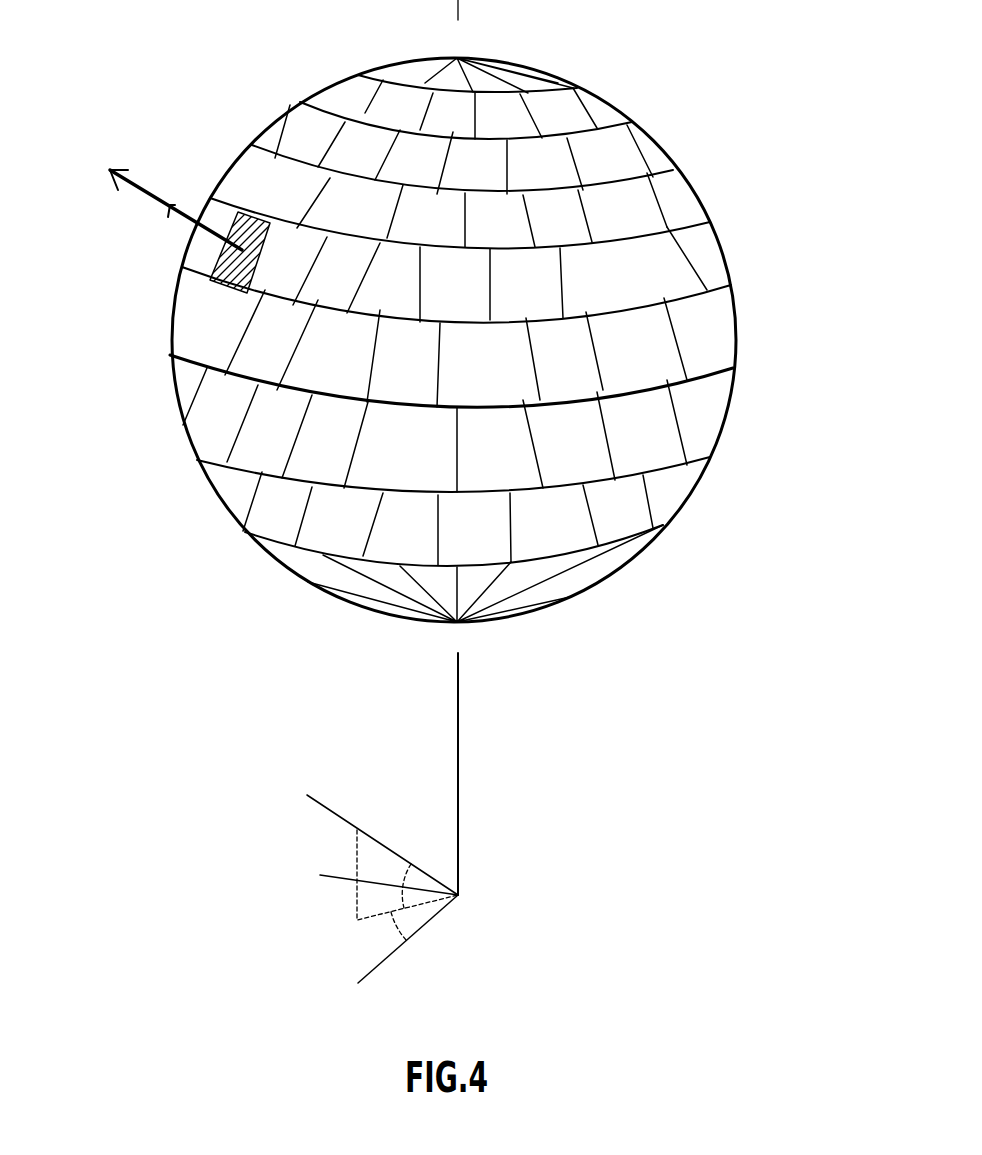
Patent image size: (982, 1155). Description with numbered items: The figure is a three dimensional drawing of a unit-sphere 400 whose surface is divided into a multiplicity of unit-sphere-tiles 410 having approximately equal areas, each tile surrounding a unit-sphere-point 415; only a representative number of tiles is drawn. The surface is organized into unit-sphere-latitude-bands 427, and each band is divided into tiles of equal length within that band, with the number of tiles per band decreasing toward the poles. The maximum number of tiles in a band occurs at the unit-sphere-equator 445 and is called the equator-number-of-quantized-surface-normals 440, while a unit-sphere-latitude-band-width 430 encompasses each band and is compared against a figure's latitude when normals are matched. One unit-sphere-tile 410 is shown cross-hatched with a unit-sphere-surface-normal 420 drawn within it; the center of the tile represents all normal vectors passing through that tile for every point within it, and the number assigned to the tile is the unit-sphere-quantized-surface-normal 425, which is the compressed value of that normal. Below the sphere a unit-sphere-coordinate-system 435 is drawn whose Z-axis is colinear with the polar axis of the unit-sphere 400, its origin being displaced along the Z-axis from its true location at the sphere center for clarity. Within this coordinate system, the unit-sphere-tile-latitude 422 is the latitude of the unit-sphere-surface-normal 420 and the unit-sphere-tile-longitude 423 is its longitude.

The unit-sphere 400 is at (128, 723).
The unit-sphere-tile 410 is at (173, 328).
The unit-sphere-point 415 is at (270, 224).
The unit-sphere-surface-normal 420 is at (145, 188).
The unit-sphere-tile-latitude 422 is at (407, 870).
The unit-sphere-tile-longitude 423 is at (393, 930).
The unit-sphere-quantized-surface-normal 425 is at (193, 222).
The unit-sphere-latitude-band 427 is at (755, 225).
The unit-sphere-latitude-band-width 430 is at (722, 210).
The unit-sphere-coordinate-system 435 is at (450, 955).
The equator-number-of-quantized-surface-normals 440 is at (740, 278).
The unit-sphere-equator 445 is at (738, 370).